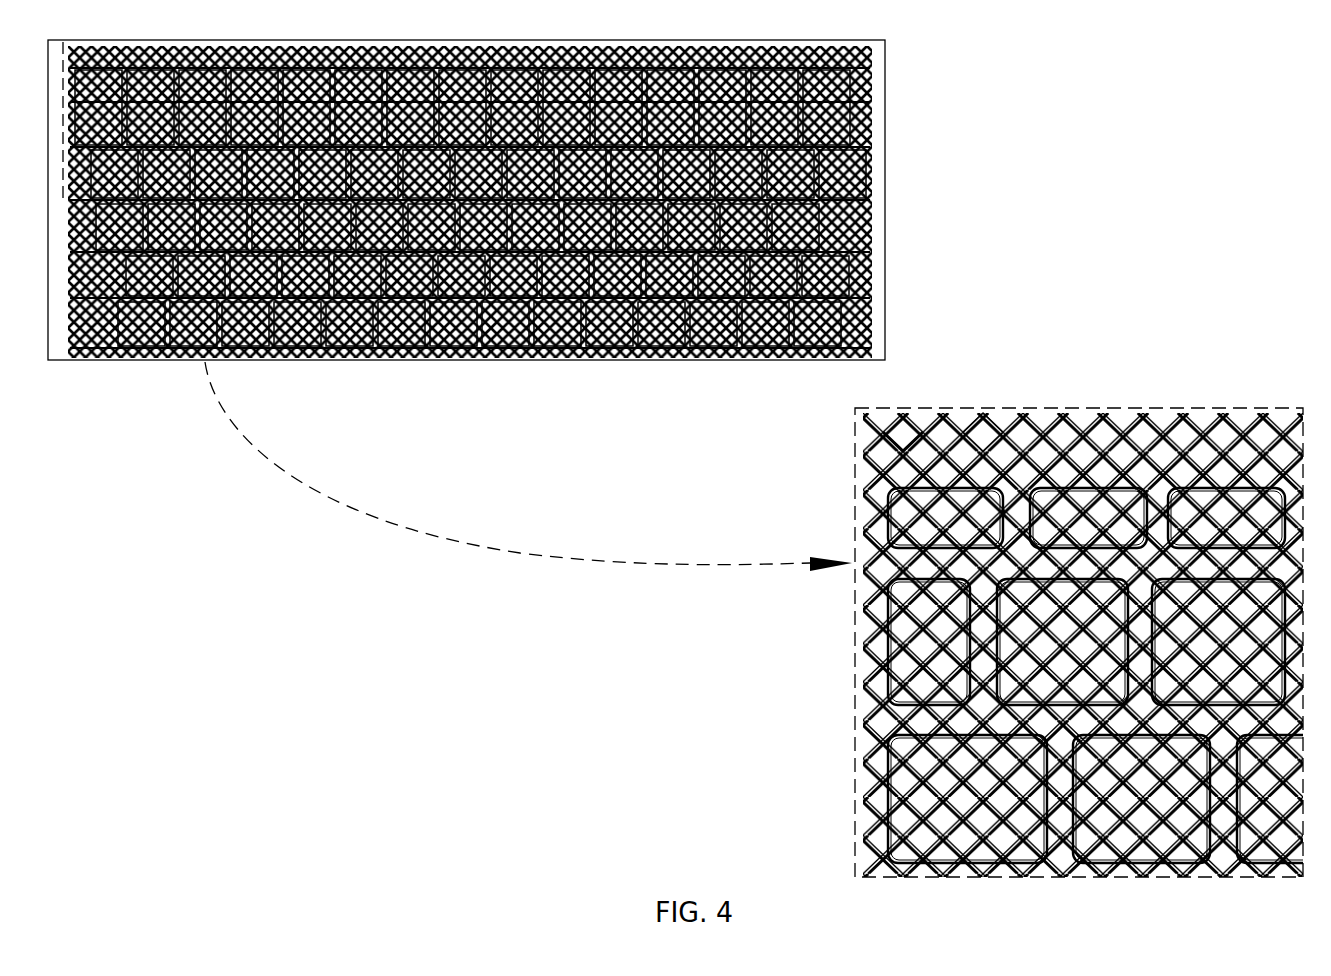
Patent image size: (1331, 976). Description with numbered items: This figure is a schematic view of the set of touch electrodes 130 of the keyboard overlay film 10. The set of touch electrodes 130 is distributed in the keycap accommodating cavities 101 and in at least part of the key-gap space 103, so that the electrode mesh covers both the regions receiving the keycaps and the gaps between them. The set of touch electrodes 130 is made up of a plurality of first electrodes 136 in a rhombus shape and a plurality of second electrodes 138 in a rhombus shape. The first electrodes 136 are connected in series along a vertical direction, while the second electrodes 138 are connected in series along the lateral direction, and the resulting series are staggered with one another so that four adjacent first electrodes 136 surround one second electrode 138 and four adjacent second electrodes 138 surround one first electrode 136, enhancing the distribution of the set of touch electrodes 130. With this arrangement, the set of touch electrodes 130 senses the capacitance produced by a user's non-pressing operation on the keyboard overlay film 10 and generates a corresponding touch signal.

The keyboard overlay film 10 is at (888, 70).
The set of touch electrodes 130 is at (707, 42).
The first electrodes 136 is at (943, 427).
The second electrodes 138 is at (883, 448).
The keycap accommodating cavities 101 is at (970, 447).
The key-gap space 103 is at (857, 588).